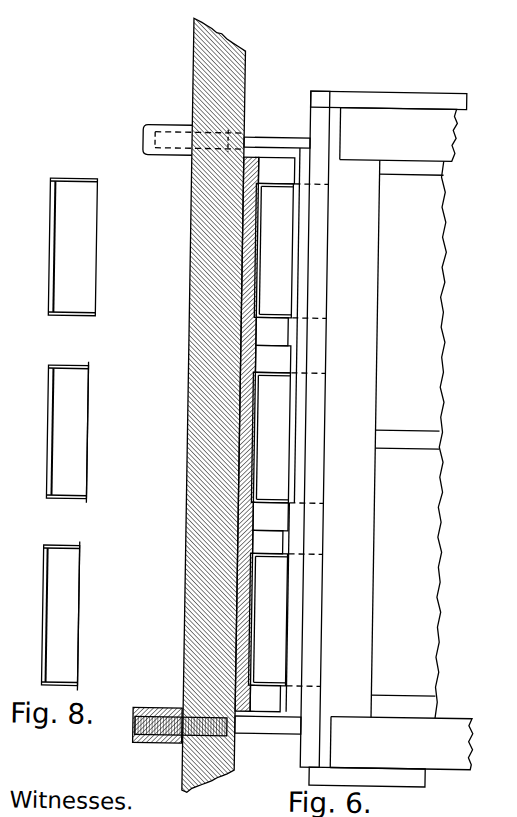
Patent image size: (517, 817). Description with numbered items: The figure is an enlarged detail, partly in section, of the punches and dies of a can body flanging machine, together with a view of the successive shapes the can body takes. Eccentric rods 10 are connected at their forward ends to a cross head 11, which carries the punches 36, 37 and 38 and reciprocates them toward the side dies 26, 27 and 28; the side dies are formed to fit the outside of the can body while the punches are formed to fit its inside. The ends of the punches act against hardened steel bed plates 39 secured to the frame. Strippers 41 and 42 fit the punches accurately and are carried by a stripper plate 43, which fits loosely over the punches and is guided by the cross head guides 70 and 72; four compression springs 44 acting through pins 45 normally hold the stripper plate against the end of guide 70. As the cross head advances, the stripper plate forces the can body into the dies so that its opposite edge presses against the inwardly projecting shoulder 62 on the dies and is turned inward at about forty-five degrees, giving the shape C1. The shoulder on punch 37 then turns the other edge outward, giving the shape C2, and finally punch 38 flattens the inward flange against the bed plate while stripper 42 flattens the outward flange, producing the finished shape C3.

In FIG. 6, the eccentric rod 10 is at (300, 237).
In FIG. 6, the cross head 11 is at (369, 544).
In FIG. 6, the side die 26 is at (264, 165).
In FIG. 6, the side die 27 is at (264, 358).
In FIG. 6, the side die 28 is at (260, 538).
In FIG. 6, the punch 36 is at (276, 250).
In FIG. 6, the punch 37 is at (271, 437).
In FIG. 6, the punch 38 is at (268, 619).
In FIG. 6, the bed plate 39 is at (247, 246).
In FIG. 6, the stripper 41 is at (301, 440).
In FIG. 6, the stripper 42 is at (299, 620).
In FIG. 6, the stripper plate 43 is at (314, 115).
In FIG. 6, the compression spring 44 is at (188, 130).
In FIG. 6, the pin 45 is at (264, 143).
In FIG. 6, the inwardly projecting shoulder 62 is at (256, 184).
In FIG. 6, the cross head guide 70 is at (406, 439).
In FIG. 6, the cross head guide 72 is at (440, 97).
In FIG. 8, the can body C1 is at (72, 247).
In FIG. 8, the can body C2 is at (67, 432).
In FIG. 8, the can body C3 is at (60, 616).